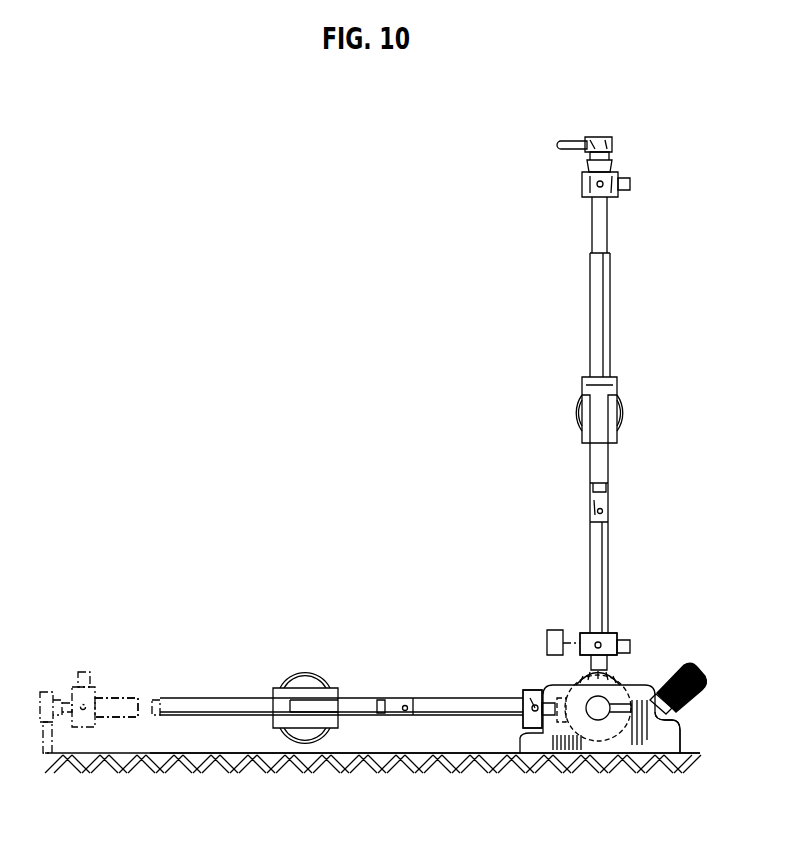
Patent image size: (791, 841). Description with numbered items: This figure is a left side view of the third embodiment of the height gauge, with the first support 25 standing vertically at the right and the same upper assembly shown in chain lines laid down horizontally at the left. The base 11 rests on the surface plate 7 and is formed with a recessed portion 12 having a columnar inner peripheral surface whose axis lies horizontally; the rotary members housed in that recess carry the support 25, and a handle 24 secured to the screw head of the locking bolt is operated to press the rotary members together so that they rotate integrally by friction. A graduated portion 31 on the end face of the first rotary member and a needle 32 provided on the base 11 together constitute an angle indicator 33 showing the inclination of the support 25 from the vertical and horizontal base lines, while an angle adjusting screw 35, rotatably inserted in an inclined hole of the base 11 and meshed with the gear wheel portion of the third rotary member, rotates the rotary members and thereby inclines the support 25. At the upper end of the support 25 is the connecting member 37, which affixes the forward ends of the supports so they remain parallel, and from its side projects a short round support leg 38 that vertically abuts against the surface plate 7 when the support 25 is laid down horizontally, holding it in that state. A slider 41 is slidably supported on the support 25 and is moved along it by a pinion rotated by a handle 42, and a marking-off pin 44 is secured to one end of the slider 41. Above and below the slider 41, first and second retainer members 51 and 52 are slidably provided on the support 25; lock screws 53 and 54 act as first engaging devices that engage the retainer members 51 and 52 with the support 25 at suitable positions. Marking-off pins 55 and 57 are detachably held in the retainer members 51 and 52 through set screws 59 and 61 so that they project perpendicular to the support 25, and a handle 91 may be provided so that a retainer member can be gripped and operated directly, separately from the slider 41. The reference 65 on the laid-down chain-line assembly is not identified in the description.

The surface plate 7 is at (441, 754).
The base 11 is at (516, 745).
The recessed portion 12 is at (572, 758).
The handle 24 is at (660, 722).
The first support 25 is at (603, 556).
The graduated portion 31 is at (605, 678).
The needle 32 is at (626, 690).
The angle indicator 33 is at (640, 681).
The angle adjusting screw 35 is at (696, 688).
The connecting member 37 is at (610, 140).
The support leg 38 is at (566, 141).
The slider 41 is at (614, 386).
The handle 42 is at (625, 418).
The marking-off pin 44 is at (604, 510).
The first retainer member 51 is at (618, 176).
The second retainer member 52 is at (613, 633).
The lock screw 53 is at (628, 191).
The lock screw 54 is at (628, 646).
The marking-off pin 55 is at (337, 424).
The marking-off pin 57 is at (596, 641).
The set screw 59 is at (586, 164).
The set screw 61 is at (570, 690).
The phantom tube position 65 is at (88, 710).
The handle 91 is at (553, 630).